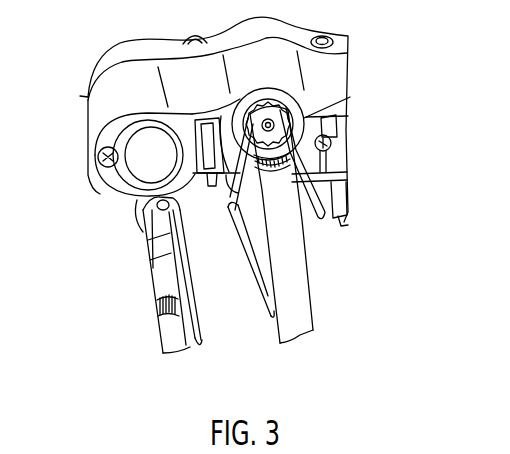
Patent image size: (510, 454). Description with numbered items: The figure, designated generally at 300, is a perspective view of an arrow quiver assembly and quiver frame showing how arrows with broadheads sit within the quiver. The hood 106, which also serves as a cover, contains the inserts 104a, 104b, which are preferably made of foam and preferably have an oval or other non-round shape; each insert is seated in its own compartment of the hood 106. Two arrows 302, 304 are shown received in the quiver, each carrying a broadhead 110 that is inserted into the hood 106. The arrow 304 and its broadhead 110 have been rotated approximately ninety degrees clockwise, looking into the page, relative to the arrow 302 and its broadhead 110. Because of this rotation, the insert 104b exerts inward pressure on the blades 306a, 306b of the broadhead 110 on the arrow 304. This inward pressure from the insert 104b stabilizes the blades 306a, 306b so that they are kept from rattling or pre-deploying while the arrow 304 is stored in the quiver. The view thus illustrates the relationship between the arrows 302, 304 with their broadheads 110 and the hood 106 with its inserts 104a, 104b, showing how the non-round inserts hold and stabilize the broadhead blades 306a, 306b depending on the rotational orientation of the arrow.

The perspective view of arrow quiver assembly and frame 300 is at (426, 51).
The hood 106 is at (88, 116).
The insert 104a is at (125, 178).
The insert 104b is at (304, 126).
The broadhead 110 is at (155, 297).
The arrow 302 is at (187, 349).
The arrow 304 is at (302, 336).
The blade 306a is at (228, 216).
The blade 306b is at (332, 226).